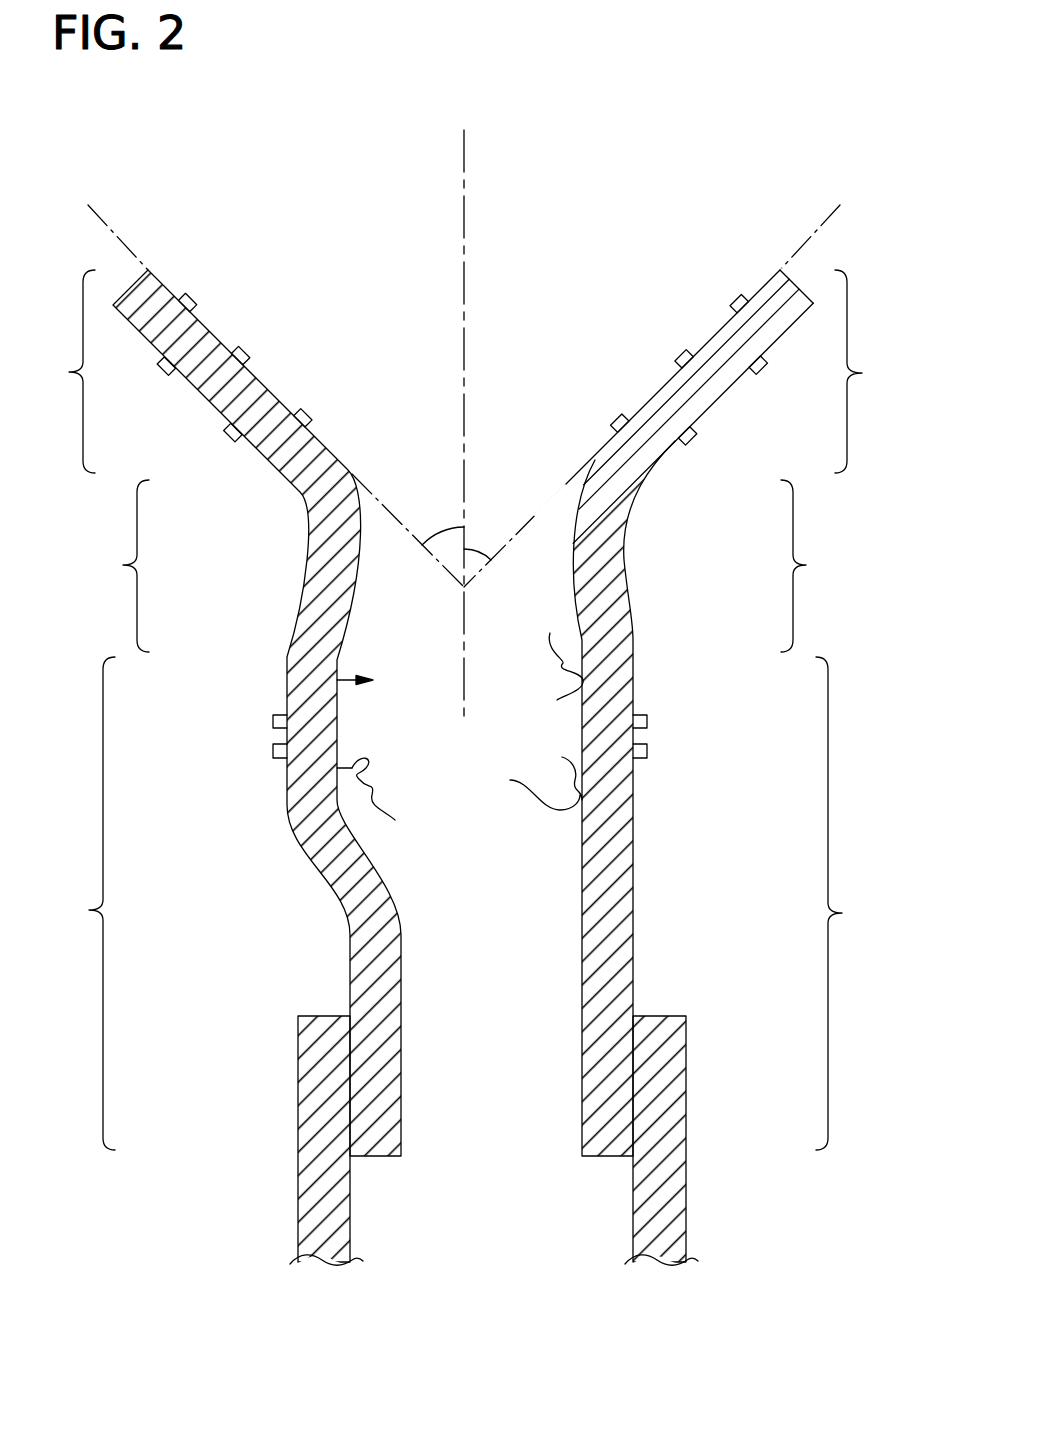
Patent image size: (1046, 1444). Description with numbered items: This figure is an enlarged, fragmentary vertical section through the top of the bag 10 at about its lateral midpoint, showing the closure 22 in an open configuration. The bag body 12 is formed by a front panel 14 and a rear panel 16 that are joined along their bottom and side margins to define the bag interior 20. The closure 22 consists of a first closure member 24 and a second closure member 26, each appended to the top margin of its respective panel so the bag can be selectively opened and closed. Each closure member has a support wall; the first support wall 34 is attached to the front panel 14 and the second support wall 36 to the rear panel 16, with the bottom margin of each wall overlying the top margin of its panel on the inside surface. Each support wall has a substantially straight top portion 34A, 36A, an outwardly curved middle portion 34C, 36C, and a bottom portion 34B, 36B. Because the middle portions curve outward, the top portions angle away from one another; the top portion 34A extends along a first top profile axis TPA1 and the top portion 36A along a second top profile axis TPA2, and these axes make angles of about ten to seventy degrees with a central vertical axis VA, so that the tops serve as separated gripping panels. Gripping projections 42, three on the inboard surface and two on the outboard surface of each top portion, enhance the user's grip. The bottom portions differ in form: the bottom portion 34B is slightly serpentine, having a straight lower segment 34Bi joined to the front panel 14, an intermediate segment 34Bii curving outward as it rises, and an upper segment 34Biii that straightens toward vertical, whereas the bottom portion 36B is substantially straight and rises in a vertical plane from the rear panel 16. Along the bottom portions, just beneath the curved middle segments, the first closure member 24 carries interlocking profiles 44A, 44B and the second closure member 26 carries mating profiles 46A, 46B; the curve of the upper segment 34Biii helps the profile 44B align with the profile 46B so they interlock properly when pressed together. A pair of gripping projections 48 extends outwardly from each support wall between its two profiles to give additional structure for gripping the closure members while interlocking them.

The bag 10 is at (140, 1217).
The bag body 12 is at (298, 1186).
The front panel 14 is at (323, 1090).
The rear panel 16 is at (684, 1194).
The bag interior 20 is at (455, 1207).
The closure 22 is at (612, 214).
The first closure member 24 is at (382, 422).
The second closure member 26 is at (523, 455).
The first support wall 34 is at (288, 620).
The top portion of first support wall 34A is at (50, 371).
The bottom portion of first support wall 34B is at (69, 903).
The middle portion of first support wall 34C is at (103, 566).
The lower segment 34Bi is at (378, 1056).
The intermediate segment 34Bii is at (360, 886).
The upper segment 34Biii is at (312, 803).
The second support wall 36 is at (630, 585).
The top portion of second support wall 36A is at (733, 406).
The bottom portion of second support wall 36B is at (862, 903).
The middle portion of second support wall 36C is at (827, 566).
The gripping projections 42 is at (194, 298).
The first interlocking profile of first closure member 44A is at (367, 681).
The second interlocking profile of first closure member 44B is at (394, 799).
The first interlocking profile of second closure member 46A is at (555, 648).
The second interlocking profile of second closure member 46B is at (519, 783).
The gripping projections 48 is at (273, 751).
The vertical axis VA is at (465, 406).
The first top profile axis TPA1 is at (271, 359).
The second top profile axis TPA2 is at (660, 367).